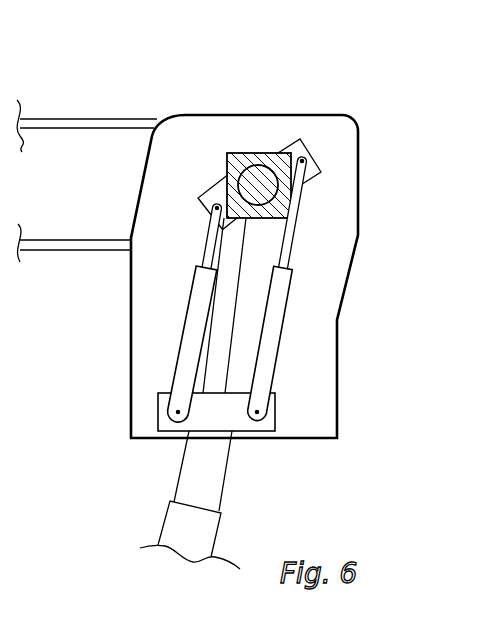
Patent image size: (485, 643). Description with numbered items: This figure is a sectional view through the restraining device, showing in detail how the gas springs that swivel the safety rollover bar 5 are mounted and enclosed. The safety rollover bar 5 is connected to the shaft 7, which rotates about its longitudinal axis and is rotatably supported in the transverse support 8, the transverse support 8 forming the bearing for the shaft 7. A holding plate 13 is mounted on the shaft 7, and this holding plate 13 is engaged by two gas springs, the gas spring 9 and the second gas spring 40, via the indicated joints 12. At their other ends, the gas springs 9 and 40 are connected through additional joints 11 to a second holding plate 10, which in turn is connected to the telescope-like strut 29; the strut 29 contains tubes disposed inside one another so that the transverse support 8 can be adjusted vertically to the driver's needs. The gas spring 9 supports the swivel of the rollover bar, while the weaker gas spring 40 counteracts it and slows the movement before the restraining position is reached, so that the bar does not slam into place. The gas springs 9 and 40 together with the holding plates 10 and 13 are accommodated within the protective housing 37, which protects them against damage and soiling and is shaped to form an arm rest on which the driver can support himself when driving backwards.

The safety rollover bar 5 is at (68, 132).
The shaft 7 is at (256, 183).
The transverse support 8 is at (238, 152).
The gas spring 9 is at (282, 328).
The holding plate 10 is at (217, 418).
The joints 11 is at (260, 435).
The joints 12 is at (305, 159).
The holding plate 13 is at (298, 140).
The telescope-like strut 29 is at (177, 478).
The protective housing 37 is at (250, 114).
The second gas spring 40 is at (183, 340).